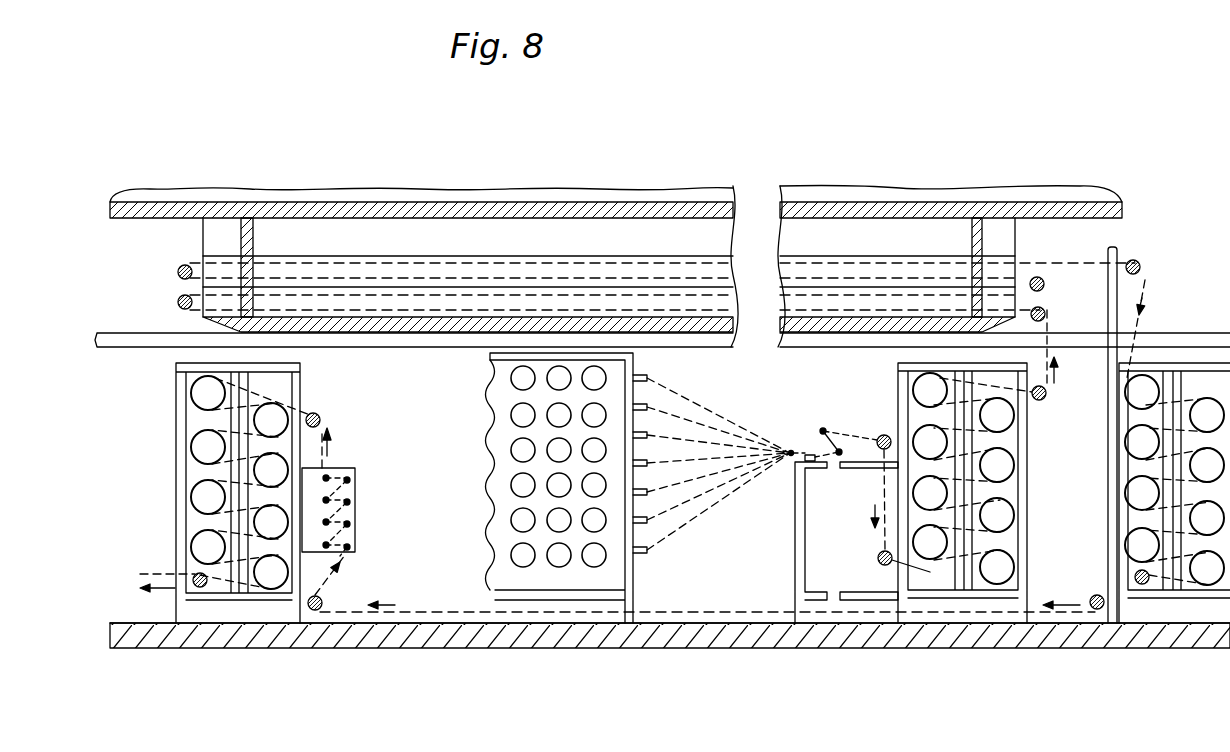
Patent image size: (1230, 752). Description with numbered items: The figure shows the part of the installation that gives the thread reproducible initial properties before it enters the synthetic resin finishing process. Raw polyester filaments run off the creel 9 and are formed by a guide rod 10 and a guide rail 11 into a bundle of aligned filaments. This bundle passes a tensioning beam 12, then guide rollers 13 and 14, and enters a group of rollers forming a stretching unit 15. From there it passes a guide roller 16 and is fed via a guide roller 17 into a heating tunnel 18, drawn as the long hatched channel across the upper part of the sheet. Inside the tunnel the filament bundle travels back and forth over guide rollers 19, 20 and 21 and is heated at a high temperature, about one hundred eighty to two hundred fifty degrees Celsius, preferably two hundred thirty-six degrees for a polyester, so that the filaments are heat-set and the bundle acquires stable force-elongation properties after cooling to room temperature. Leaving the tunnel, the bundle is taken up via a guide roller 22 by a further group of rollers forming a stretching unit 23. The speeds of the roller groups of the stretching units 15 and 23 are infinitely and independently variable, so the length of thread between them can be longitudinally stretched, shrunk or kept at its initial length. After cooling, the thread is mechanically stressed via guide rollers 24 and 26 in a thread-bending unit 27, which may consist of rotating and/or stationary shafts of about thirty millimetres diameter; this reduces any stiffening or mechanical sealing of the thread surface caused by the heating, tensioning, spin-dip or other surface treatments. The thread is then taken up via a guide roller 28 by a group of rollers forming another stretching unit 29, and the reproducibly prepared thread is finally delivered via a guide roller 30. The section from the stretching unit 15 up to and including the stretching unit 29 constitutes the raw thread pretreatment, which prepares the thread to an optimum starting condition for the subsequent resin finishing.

The creel 9 is at (556, 570).
The guide rod 10 is at (789, 451).
The guide rail 11 is at (809, 455).
The tensioning beam 12 is at (824, 430).
The guide roller 13 is at (884, 435).
The guide roller 14 is at (884, 558).
The stretching unit 15 is at (950, 598).
The guide roller 16 is at (1046, 395).
The guide roller 17 is at (1045, 312).
The heating tunnel 18 is at (455, 318).
The guide roller 19 is at (178, 300).
The guide roller 20 is at (1037, 278).
The guide roller 21 is at (178, 270).
The guide roller 22 is at (1138, 262).
The stretching unit 23 is at (1194, 600).
The guide roller 24 is at (1141, 585).
The guide roller 26 is at (319, 611).
The thread-bending unit 27 is at (360, 514).
The guide roller 28 is at (320, 419).
The stretching unit 29 is at (258, 601).
The guide roller 30 is at (201, 588).